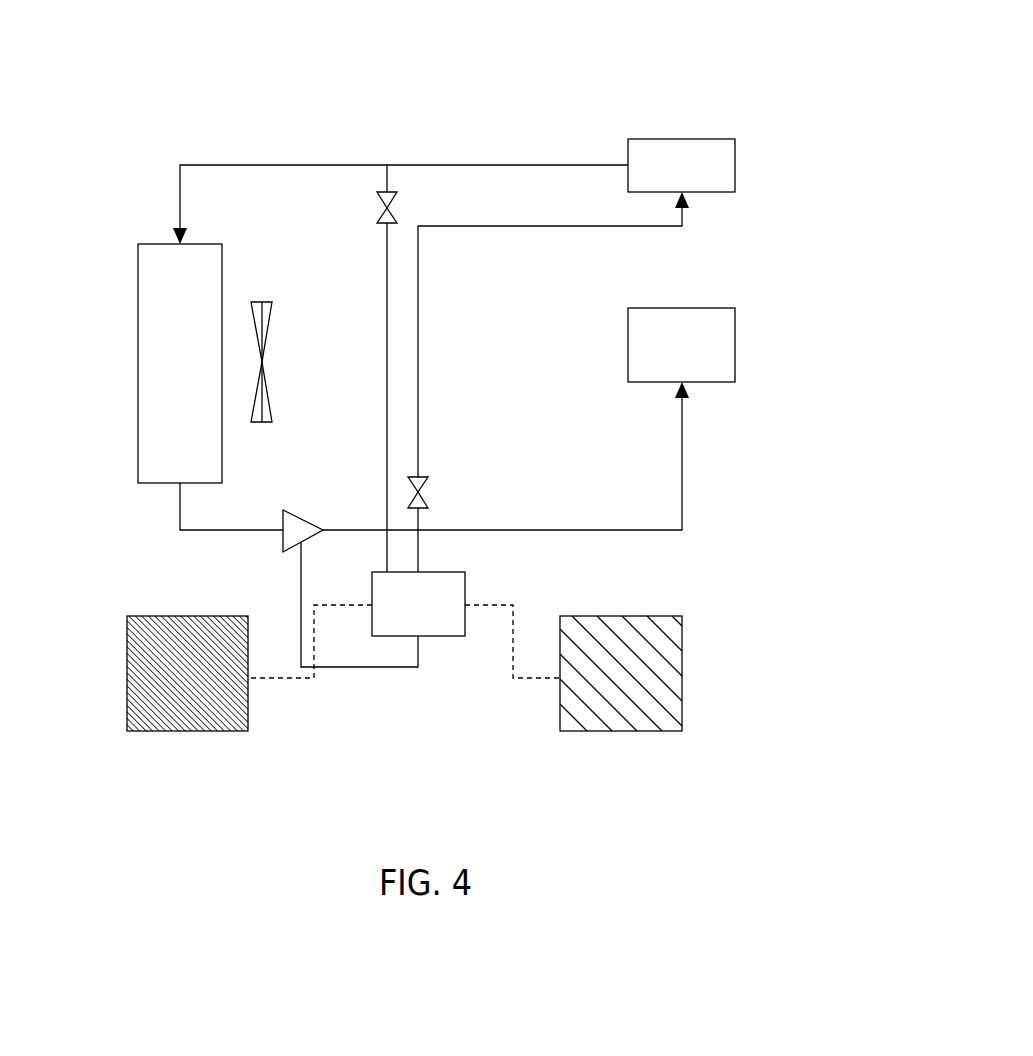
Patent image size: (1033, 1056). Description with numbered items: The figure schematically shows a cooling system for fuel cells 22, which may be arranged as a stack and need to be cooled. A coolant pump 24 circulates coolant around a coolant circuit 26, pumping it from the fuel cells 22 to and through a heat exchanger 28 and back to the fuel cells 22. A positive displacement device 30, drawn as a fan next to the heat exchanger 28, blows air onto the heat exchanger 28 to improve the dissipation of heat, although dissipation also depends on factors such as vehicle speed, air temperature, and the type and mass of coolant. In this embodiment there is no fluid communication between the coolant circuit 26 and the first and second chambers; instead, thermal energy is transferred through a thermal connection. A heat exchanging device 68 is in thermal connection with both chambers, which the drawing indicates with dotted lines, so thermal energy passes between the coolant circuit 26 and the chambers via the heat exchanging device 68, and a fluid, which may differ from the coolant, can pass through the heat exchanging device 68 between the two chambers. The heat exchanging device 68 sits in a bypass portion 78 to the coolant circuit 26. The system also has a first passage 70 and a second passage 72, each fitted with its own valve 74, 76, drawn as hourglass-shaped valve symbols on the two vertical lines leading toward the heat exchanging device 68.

The fuel cells 22 is at (735, 352).
The coolant pump 24 is at (682, 139).
The coolant circuit 26 is at (503, 165).
The heat exchanger 28 is at (138, 385).
The positive displacement device 30 is at (262, 362).
The heat exchanging device 68 is at (450, 637).
The first passage 70 is at (418, 357).
The second passage 72 is at (387, 336).
The valve 74 is at (424, 492).
The valve 76 is at (377, 212).
The bypass portion 78 is at (301, 590).